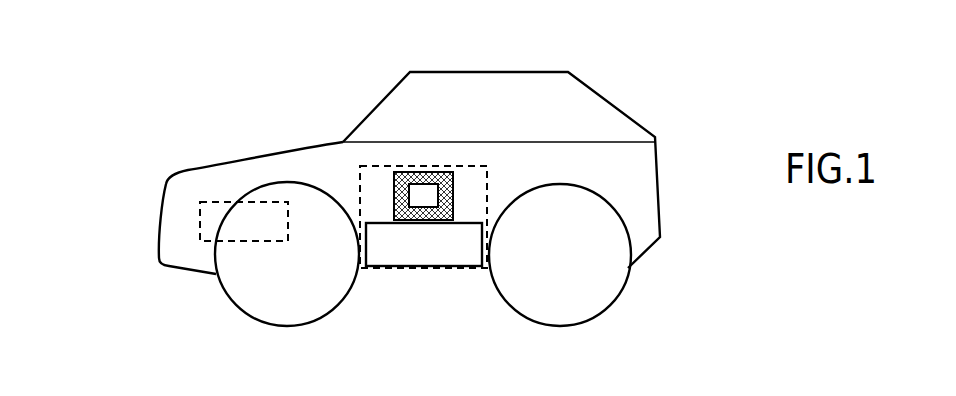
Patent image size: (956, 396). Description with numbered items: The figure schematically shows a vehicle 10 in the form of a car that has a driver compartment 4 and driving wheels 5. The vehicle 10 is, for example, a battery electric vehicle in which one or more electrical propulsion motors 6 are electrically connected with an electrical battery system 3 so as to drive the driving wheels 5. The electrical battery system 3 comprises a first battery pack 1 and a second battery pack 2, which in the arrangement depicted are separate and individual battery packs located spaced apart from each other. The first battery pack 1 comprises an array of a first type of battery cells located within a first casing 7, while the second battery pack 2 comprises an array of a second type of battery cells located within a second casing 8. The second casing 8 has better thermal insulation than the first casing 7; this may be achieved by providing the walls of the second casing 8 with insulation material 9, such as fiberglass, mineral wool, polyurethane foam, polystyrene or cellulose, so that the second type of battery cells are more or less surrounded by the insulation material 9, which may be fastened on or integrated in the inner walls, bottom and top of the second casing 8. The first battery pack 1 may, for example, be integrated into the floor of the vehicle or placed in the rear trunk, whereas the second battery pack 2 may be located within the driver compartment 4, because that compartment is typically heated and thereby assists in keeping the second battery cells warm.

The vehicle 10 is at (215, 88).
The first battery pack 1 is at (402, 248).
The second battery pack 2 is at (423, 197).
The electrical battery system 3 is at (358, 182).
The driver compartment 4 is at (528, 113).
The driving wheels 5 is at (288, 275).
The electrical propulsion motor 6 is at (200, 241).
The first casing 7 is at (481, 240).
The second casing 8 is at (438, 173).
The insulation material 9 is at (395, 173).